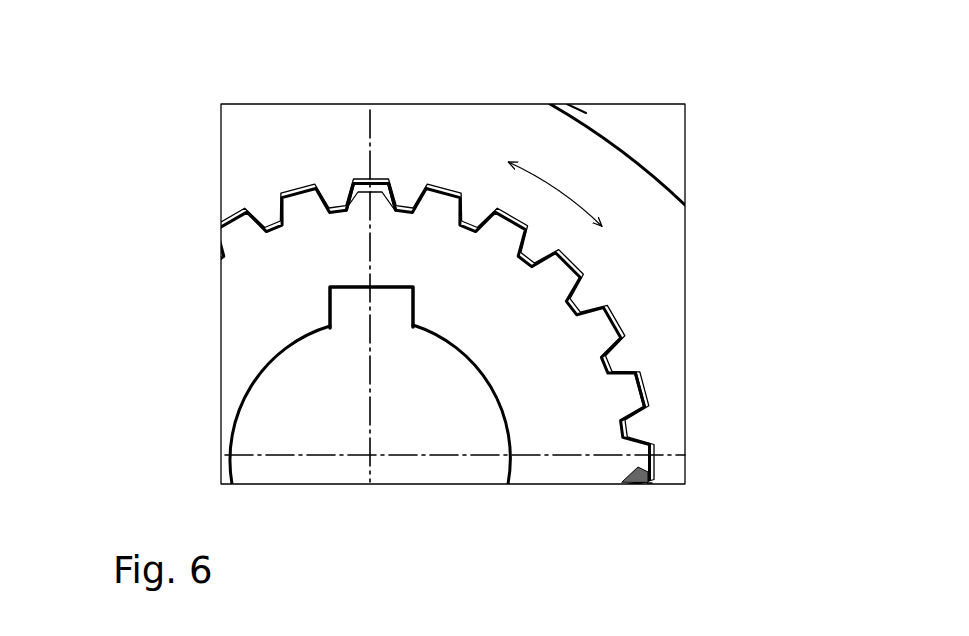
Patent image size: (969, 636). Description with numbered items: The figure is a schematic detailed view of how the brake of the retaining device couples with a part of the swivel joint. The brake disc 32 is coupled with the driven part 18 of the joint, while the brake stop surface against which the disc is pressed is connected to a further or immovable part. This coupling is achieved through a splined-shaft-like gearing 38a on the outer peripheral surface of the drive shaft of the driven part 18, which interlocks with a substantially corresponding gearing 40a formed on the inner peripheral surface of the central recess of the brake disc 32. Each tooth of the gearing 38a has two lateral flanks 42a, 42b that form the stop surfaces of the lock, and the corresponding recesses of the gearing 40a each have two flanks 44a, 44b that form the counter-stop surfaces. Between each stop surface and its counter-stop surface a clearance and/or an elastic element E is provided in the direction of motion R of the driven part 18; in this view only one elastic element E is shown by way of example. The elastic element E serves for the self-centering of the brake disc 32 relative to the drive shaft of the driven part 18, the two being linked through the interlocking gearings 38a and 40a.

The driven part 18 is at (263, 313).
The brake disc 32 is at (613, 212).
The splined-shaft-like gearing 38a is at (620, 467).
The gearing 40a is at (640, 390).
The lateral flank 42a is at (362, 198).
The lateral flank 42b is at (376, 198).
The flank 44a is at (348, 180).
The flank 44b is at (397, 187).
The direction of motion R is at (555, 185).
The elastic element E is at (647, 483).